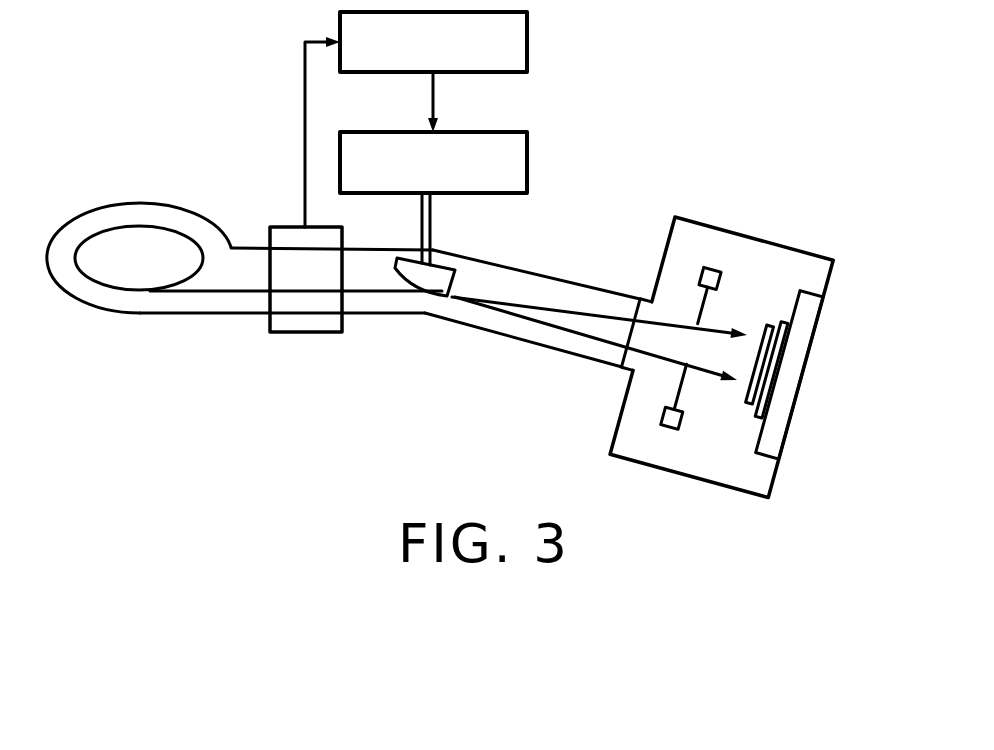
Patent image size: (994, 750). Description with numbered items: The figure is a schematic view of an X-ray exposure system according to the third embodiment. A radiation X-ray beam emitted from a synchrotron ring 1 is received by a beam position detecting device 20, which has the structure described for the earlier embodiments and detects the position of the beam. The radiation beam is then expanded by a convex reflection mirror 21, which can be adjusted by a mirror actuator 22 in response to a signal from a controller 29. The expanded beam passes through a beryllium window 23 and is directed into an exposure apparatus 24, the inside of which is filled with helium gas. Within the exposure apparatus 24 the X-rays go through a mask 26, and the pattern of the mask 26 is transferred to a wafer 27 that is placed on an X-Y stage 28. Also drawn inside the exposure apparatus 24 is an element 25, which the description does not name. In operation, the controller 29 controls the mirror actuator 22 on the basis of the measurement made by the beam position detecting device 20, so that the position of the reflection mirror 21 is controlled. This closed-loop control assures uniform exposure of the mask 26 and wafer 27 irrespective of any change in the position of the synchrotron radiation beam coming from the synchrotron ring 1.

The synchrotron ring 1 is at (150, 236).
The beam position detecting device 20 is at (311, 345).
The convex reflection mirror 21 is at (527, 162).
The mirror actuator 22 is at (440, 277).
The beryllium window 23 is at (633, 308).
The exposure apparatus 24 is at (707, 220).
The lens element 25 is at (715, 268).
The mask 26 is at (770, 325).
The wafer 27 is at (788, 322).
The X-Y stage 28 is at (787, 392).
The controller 29 is at (527, 44).